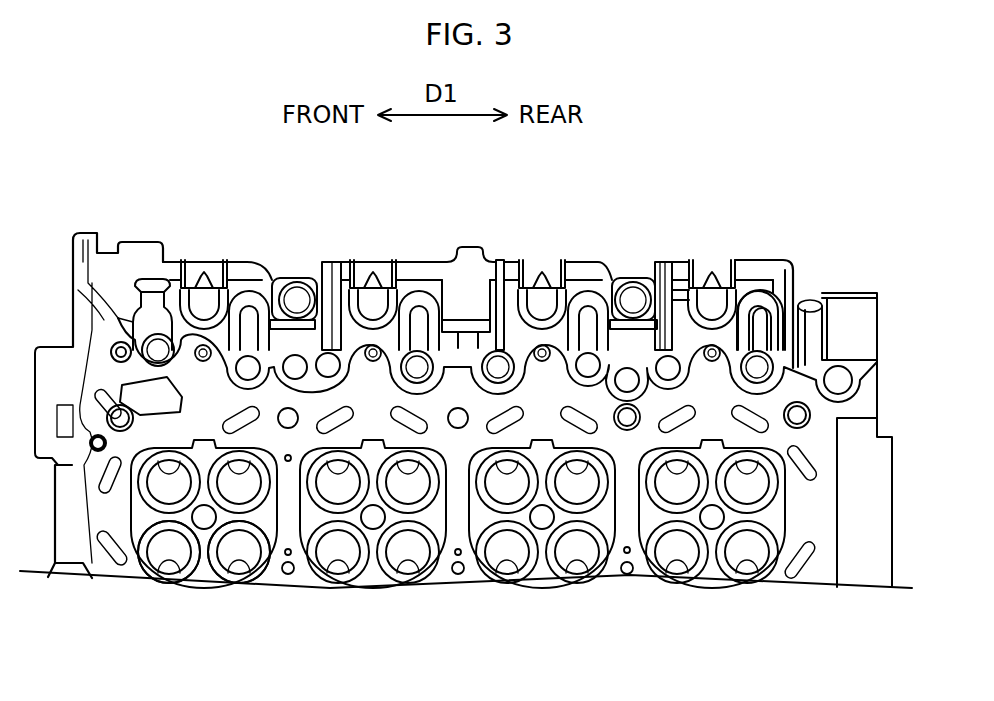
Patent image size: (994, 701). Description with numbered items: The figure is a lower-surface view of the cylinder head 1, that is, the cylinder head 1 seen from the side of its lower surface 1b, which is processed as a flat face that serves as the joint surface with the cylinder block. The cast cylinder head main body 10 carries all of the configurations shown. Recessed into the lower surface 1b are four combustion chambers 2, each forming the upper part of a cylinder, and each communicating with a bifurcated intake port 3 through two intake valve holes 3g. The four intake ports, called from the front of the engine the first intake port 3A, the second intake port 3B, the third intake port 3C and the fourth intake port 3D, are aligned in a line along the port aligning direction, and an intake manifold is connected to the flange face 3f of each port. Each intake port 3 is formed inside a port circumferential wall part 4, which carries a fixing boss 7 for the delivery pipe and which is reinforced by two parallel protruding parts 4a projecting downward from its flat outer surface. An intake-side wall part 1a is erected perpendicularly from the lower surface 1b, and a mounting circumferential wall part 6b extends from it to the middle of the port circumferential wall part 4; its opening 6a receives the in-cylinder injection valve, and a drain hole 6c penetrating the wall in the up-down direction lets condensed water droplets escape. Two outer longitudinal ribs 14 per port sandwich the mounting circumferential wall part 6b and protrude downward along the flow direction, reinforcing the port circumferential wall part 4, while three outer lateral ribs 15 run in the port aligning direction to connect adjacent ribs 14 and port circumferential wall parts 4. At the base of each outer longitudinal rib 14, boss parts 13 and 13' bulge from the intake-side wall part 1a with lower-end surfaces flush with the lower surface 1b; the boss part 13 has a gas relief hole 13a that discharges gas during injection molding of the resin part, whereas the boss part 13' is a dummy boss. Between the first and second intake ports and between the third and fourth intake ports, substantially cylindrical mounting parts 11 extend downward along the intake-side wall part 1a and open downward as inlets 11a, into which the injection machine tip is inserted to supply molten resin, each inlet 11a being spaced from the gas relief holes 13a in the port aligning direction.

The cylinder head 1 is at (98, 200).
The intake-side wall part 1a is at (362, 375).
The lower surface 1b is at (615, 466).
The combustion chamber 2 is at (382, 588).
The intake port 3 is at (458, 514).
The first intake port 3A is at (189, 242).
The second intake port 3B is at (353, 240).
The third intake port 3C is at (528, 242).
The fourth intake port 3D is at (728, 236).
The flange face 3f is at (205, 268).
The intake valve hole 3g is at (145, 557).
The port circumferential wall part 4 is at (809, 277).
The protruding part 4a is at (370, 262).
The opening 6a is at (548, 315).
The mounting circumferential wall part 6b is at (508, 325).
The drain hole 6c is at (203, 362).
The fixing boss 7 is at (765, 292).
The cylinder head main body 10 is at (814, 598).
The mounting part 11 is at (301, 264).
The inlet 11a is at (282, 288).
The boss part 13 is at (812, 301).
The boss part 13' is at (690, 253).
The gas relief hole 13a is at (155, 365).
The outer longitudinal rib 14 is at (152, 280).
The outer lateral rib 15 is at (458, 323).